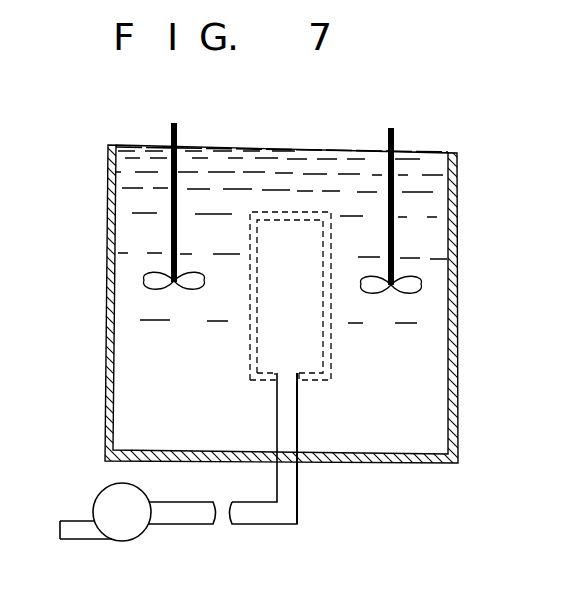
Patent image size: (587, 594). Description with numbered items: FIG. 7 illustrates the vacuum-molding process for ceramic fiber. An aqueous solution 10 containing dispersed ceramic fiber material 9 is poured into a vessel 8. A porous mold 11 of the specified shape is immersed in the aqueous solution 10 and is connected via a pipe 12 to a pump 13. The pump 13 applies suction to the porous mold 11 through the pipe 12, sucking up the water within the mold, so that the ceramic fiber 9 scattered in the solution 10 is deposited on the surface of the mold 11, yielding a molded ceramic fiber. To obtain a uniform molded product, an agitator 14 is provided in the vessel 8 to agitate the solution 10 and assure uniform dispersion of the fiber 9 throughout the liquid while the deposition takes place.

The vessel 8 is at (458, 200).
The ceramic fiber material 9 is at (324, 218).
The aqueous solution 10 is at (420, 367).
The porous mold 11 is at (256, 275).
The pipe 12 is at (298, 494).
The pump 13 is at (140, 532).
The agitator 14 is at (175, 123).